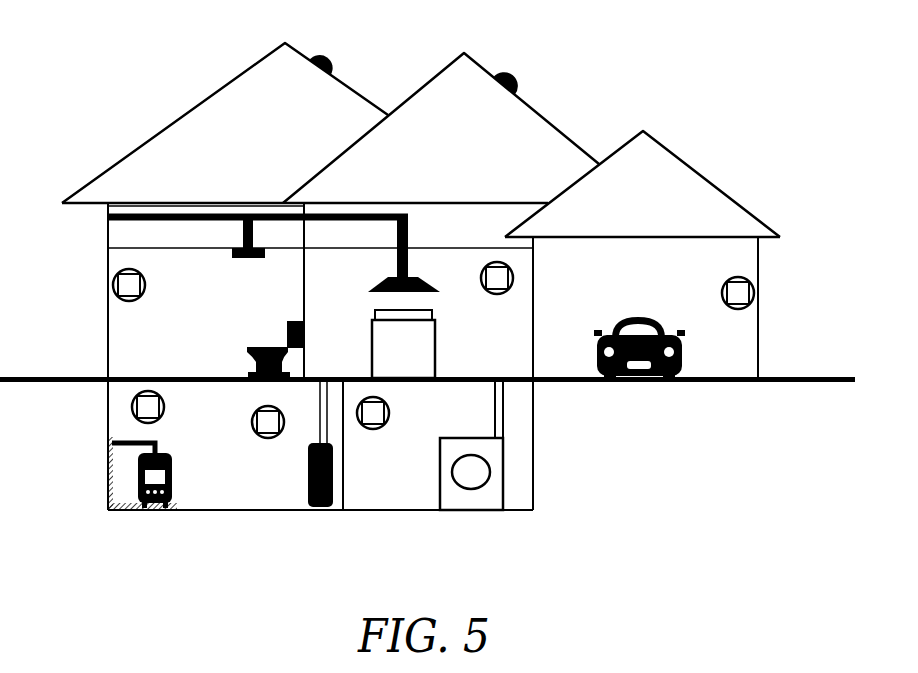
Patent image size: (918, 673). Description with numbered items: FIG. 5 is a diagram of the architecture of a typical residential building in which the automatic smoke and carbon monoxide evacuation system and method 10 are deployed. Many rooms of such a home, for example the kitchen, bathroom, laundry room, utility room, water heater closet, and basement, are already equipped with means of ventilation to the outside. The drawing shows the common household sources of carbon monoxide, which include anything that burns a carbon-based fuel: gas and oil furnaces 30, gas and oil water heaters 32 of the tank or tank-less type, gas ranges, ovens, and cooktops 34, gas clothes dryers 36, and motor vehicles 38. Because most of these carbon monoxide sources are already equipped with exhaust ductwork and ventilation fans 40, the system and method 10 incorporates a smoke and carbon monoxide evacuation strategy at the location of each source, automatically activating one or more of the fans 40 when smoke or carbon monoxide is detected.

The automatic smoke and carbon monoxide evacuation system and method 10 is at (113, 280).
The gas and oil furnace 30 is at (172, 485).
The gas and oil water heater 32 is at (308, 492).
The gas range, oven, and cooktop 34 is at (437, 355).
The gas clothes dryer 36 is at (503, 467).
The motor vehicle 38 is at (622, 317).
The exhaust ductwork and ventilation fan 40 is at (332, 62).